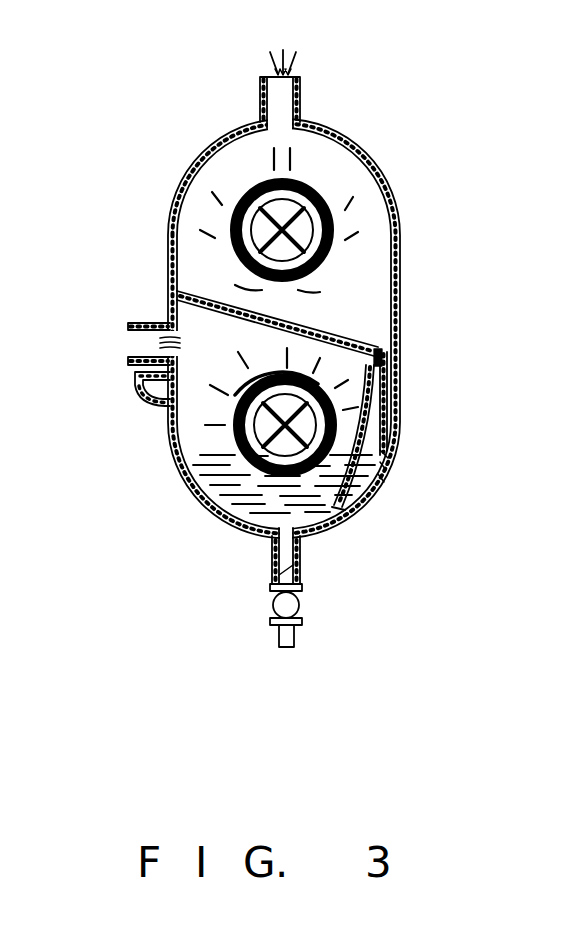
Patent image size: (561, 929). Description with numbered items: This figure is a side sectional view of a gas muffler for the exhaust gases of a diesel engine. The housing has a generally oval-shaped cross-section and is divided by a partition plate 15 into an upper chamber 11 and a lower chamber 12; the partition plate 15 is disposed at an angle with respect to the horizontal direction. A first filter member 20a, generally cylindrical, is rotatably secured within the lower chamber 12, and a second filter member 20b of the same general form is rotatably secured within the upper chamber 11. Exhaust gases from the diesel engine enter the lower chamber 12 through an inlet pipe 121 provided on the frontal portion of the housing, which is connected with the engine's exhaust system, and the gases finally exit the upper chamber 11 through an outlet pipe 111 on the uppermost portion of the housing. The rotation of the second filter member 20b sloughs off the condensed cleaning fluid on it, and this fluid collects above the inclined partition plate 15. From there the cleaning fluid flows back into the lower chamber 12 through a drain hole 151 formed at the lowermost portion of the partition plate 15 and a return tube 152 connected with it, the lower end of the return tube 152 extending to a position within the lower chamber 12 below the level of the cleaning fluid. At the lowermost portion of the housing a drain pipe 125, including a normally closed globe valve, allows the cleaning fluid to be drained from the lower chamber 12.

The upper chamber 11 is at (390, 208).
The outlet pipe 111 is at (295, 76).
The second filter member 20b is at (297, 182).
The partition plate 15 is at (386, 330).
The drain hole 151 is at (386, 342).
The return tube 152 is at (393, 427).
The inlet pipe 121 is at (128, 340).
The lower chamber 12 is at (197, 423).
The first filter member 20a is at (253, 467).
The drain pipe 125 is at (305, 600).